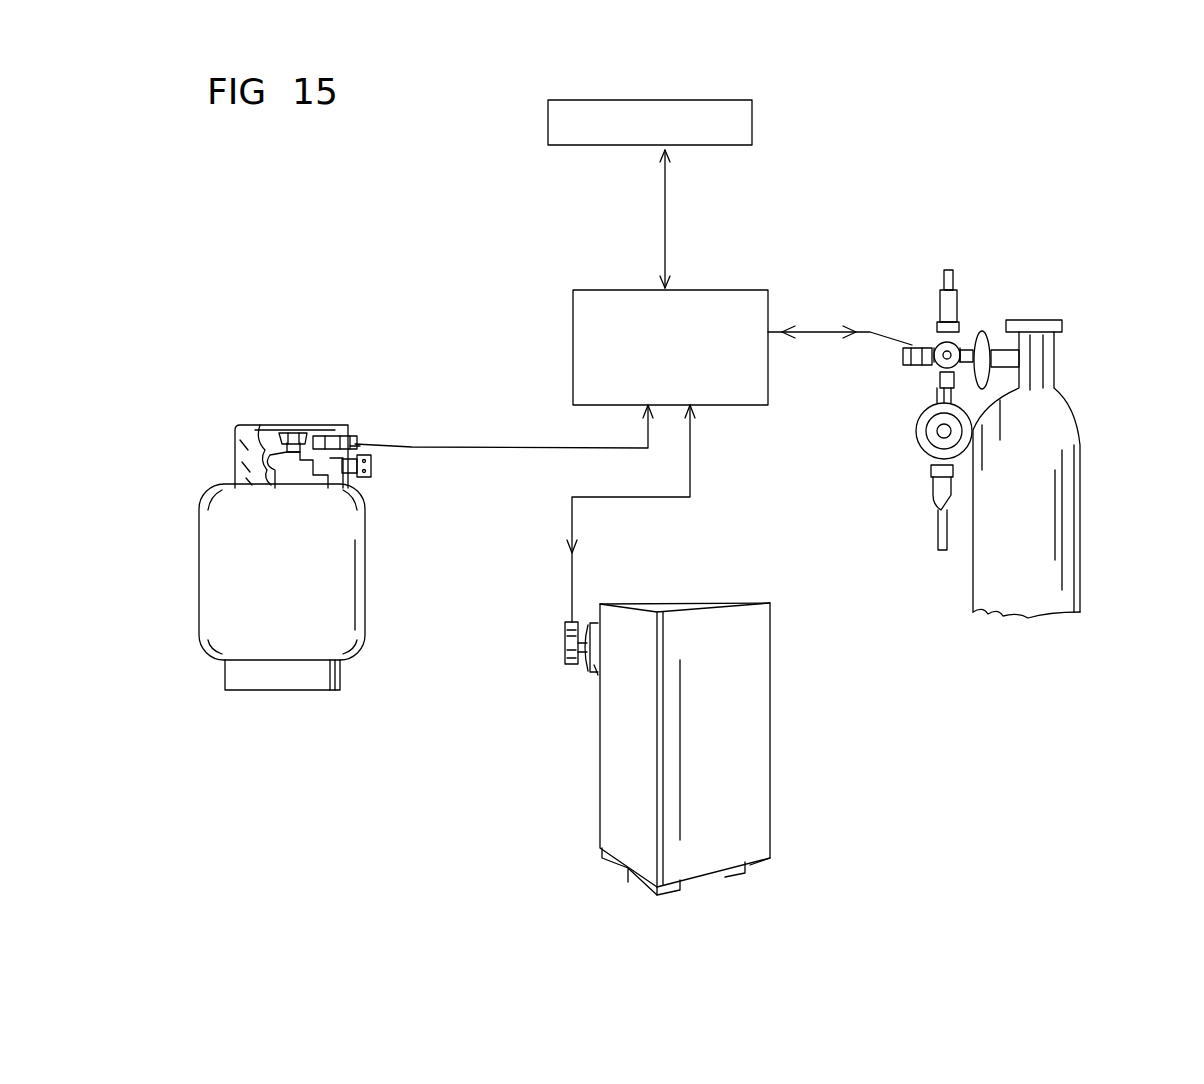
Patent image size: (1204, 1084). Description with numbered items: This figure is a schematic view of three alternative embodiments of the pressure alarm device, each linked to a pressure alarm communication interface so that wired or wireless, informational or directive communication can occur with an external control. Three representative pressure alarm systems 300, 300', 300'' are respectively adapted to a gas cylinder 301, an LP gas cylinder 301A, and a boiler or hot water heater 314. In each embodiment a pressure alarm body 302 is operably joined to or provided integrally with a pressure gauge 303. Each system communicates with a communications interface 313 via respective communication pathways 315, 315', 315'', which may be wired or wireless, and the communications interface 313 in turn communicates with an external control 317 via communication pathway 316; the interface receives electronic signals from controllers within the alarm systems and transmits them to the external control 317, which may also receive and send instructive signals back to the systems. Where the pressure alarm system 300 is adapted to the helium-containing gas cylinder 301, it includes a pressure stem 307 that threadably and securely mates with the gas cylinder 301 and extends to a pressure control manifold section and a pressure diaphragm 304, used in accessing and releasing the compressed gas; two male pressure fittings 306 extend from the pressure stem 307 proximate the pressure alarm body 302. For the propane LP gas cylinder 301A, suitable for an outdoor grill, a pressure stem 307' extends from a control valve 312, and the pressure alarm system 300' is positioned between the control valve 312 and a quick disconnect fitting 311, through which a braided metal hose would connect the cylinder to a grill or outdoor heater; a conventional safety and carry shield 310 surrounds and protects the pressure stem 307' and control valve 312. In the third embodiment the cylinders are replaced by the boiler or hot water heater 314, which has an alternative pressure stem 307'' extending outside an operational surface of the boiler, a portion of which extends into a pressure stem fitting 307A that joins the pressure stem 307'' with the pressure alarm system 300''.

The external control 317 is at (548, 122).
The communication pathway 316 is at (661, 214).
The communications interface 313 is at (588, 290).
The communication pathway 315 is at (840, 314).
The communication pathway 315' is at (504, 443).
The communication pathway 315'' is at (631, 513).
The LP gas cylinder 301A is at (215, 665).
The safety and carry shield 310 is at (235, 452).
The control valve 312 is at (265, 428).
The pressure stem 307' is at (231, 405).
The pressure alarm body 302 is at (295, 435).
The pressure gauge 303 is at (338, 436).
The pressure alarm system 300' is at (371, 403).
The quick disconnect fitting 311 is at (370, 478).
The pressure alarm system 300'' is at (502, 621).
The pressure stem fitting 307A is at (580, 667).
The pressure stem 307'' is at (555, 690).
The boiler or hot water heater 314 is at (613, 793).
The gas cylinder 301 is at (1082, 588).
The pressure alarm system 300 is at (926, 285).
The male pressure fittings 306 is at (955, 290).
The pressure stem 307 is at (909, 390).
The pressure diaphragm 304 is at (920, 444).